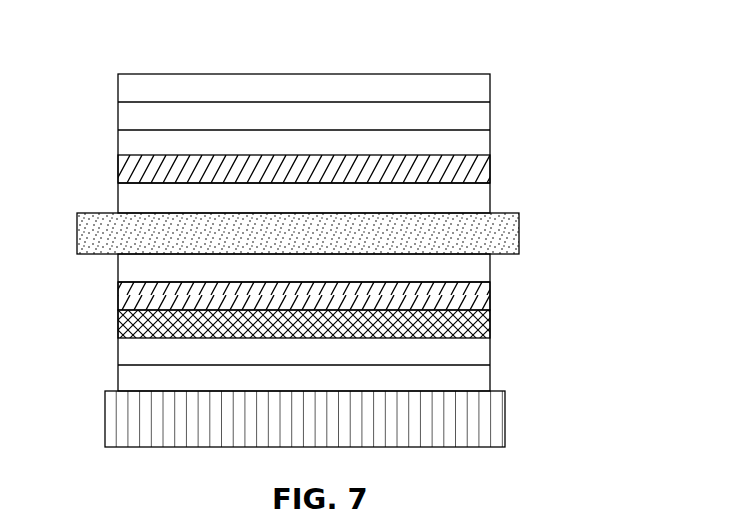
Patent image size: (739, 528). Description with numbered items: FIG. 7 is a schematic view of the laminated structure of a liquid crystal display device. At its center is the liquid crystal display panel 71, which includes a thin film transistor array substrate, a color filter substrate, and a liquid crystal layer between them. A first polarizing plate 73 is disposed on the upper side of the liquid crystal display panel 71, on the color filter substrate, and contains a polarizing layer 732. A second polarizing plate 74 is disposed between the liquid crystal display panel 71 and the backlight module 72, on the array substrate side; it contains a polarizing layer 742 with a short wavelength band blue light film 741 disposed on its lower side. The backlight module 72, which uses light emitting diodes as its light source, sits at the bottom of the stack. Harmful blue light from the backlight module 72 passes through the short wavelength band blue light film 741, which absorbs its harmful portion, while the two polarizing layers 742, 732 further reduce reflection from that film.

The first polarizing plate 73 is at (306, 143).
The polarizing layer 732 is at (490, 171).
The liquid crystal display panel 71 is at (519, 233).
The second polarizing plate 74 is at (305, 322).
The polarizing layer 742 is at (490, 298).
The short wavelength band blue light film 741 is at (490, 325).
The backlight module 72 is at (505, 418).